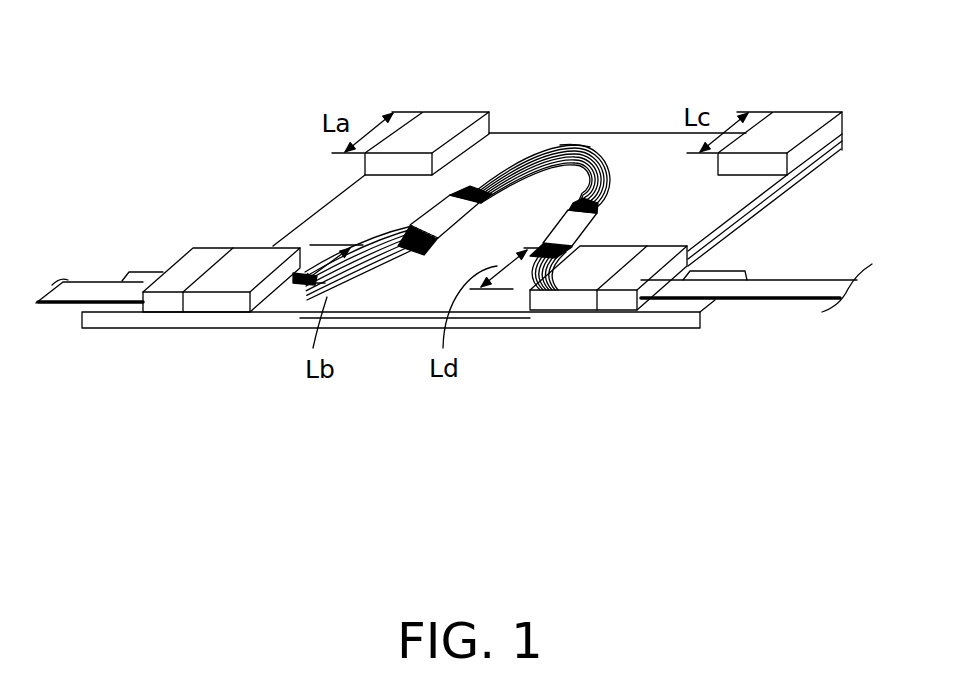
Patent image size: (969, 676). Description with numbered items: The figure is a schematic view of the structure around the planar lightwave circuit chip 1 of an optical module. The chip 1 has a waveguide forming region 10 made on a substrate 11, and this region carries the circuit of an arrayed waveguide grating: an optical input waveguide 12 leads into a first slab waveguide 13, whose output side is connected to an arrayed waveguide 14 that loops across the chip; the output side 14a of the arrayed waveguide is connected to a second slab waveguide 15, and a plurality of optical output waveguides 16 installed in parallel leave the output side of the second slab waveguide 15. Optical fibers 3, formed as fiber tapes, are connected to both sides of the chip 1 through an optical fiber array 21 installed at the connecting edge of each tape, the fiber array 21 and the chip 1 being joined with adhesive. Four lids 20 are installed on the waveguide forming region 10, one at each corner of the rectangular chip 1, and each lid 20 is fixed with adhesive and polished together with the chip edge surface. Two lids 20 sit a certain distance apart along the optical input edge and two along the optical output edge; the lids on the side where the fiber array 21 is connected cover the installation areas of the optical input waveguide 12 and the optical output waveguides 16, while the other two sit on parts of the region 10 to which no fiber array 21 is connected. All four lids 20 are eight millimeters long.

The planar lightwave circuit chip 1 is at (698, 222).
The optical fiber 3 is at (63, 294).
The waveguide forming region 10 is at (750, 192).
The substrate 11 is at (836, 160).
The optical input waveguide 12 is at (383, 275).
The first slab waveguide 13 is at (433, 212).
The arrayed waveguide 14 is at (531, 138).
The arrayed waveguide output side 14a is at (588, 142).
The second slab waveguide 15 is at (578, 230).
The optical output waveguide 16 is at (524, 263).
The lid 20 is at (447, 118).
The optical fiber array 21 is at (113, 312).